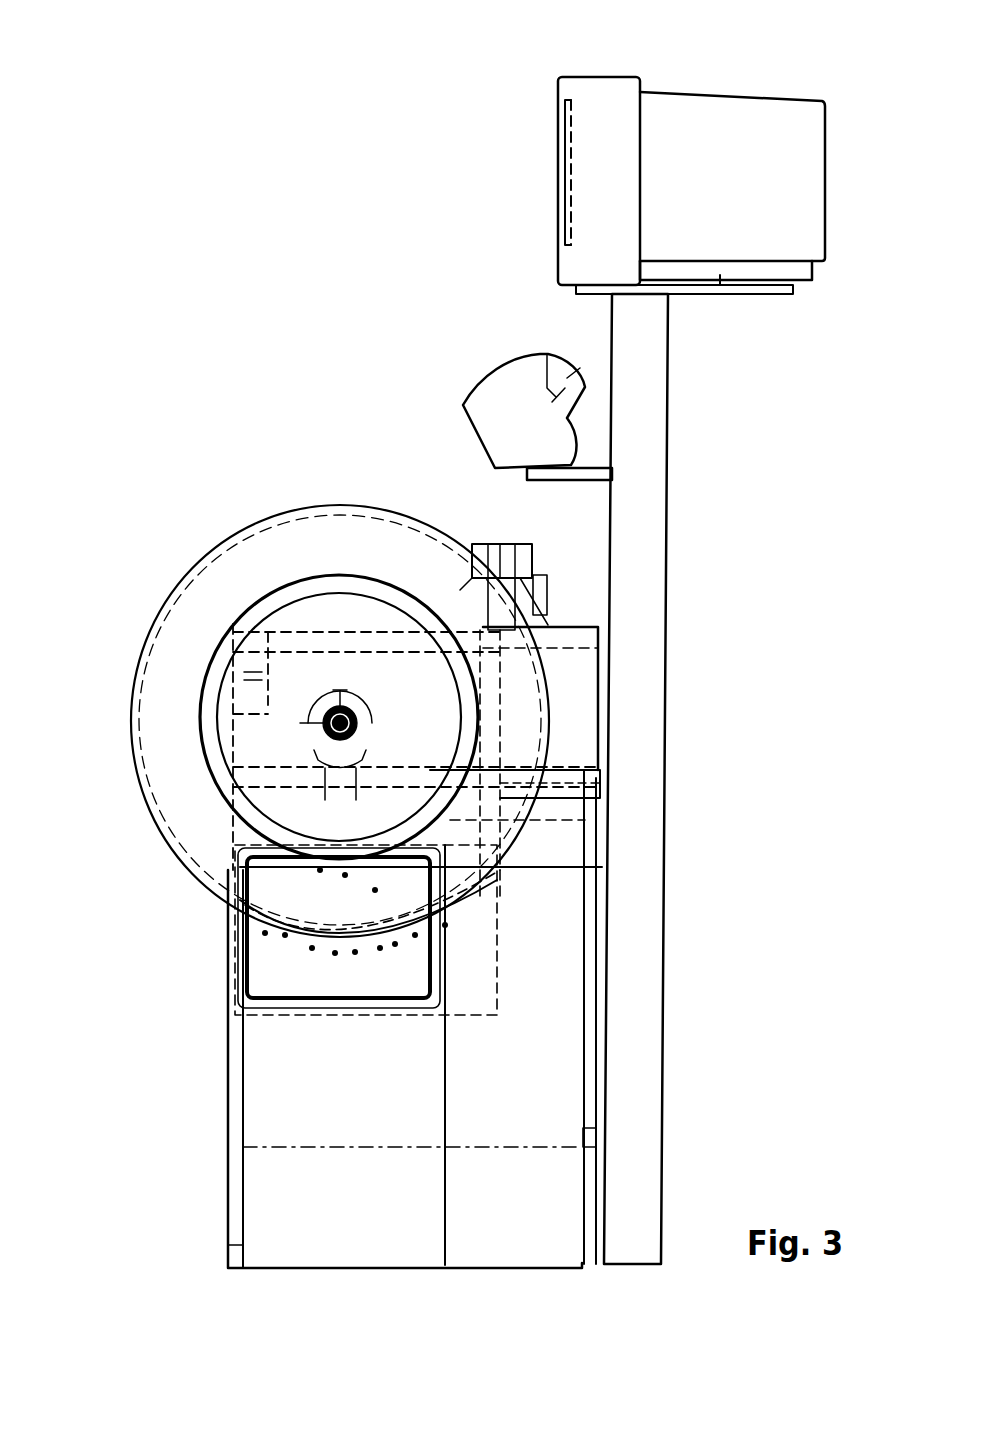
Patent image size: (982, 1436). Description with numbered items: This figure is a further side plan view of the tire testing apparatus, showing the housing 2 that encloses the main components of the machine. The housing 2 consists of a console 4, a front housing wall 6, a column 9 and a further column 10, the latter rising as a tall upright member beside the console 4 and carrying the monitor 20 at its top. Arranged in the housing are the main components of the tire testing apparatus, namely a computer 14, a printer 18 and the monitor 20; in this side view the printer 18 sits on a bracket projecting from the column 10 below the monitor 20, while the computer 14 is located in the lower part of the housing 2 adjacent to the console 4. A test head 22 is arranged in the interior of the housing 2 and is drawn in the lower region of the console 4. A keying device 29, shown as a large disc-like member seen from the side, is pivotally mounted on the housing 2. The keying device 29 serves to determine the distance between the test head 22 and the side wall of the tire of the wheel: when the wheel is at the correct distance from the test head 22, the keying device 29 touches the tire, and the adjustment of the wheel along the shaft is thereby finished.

The housing 2 is at (724, 422).
The console 4 is at (578, 683).
The front housing wall 6 is at (240, 1178).
The column 9 is at (540, 1240).
The column 10 is at (640, 742).
The computer 14 is at (590, 958).
The printer 18 is at (493, 402).
The monitor 20 is at (712, 137).
The test head 22 is at (270, 977).
The keying device 29 is at (233, 582).